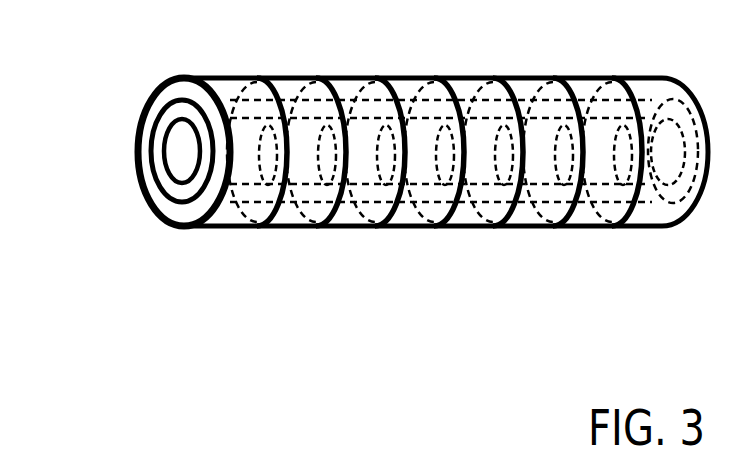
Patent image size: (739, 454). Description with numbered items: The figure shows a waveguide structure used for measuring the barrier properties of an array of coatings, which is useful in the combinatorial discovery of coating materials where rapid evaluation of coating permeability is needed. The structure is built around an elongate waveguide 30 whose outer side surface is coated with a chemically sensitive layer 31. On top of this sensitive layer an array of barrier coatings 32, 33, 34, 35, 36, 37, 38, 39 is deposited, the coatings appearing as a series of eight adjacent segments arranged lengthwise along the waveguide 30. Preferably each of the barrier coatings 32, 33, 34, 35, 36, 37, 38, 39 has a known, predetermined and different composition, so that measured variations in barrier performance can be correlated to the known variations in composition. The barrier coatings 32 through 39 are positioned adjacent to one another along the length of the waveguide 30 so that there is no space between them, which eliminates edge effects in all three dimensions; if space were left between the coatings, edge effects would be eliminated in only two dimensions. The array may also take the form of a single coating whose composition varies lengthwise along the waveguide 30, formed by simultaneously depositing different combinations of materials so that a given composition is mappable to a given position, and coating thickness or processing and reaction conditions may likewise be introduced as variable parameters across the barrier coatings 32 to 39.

The waveguide 30 is at (183, 148).
The chemically sensitive layer 31 is at (183, 115).
The barrier coating 32 is at (238, 215).
The barrier coating 33 is at (300, 213).
The barrier coating 34 is at (358, 213).
The barrier coating 35 is at (420, 213).
The barrier coating 36 is at (477, 213).
The barrier coating 37 is at (540, 213).
The barrier coating 38 is at (600, 215).
The barrier coating 39 is at (667, 215).